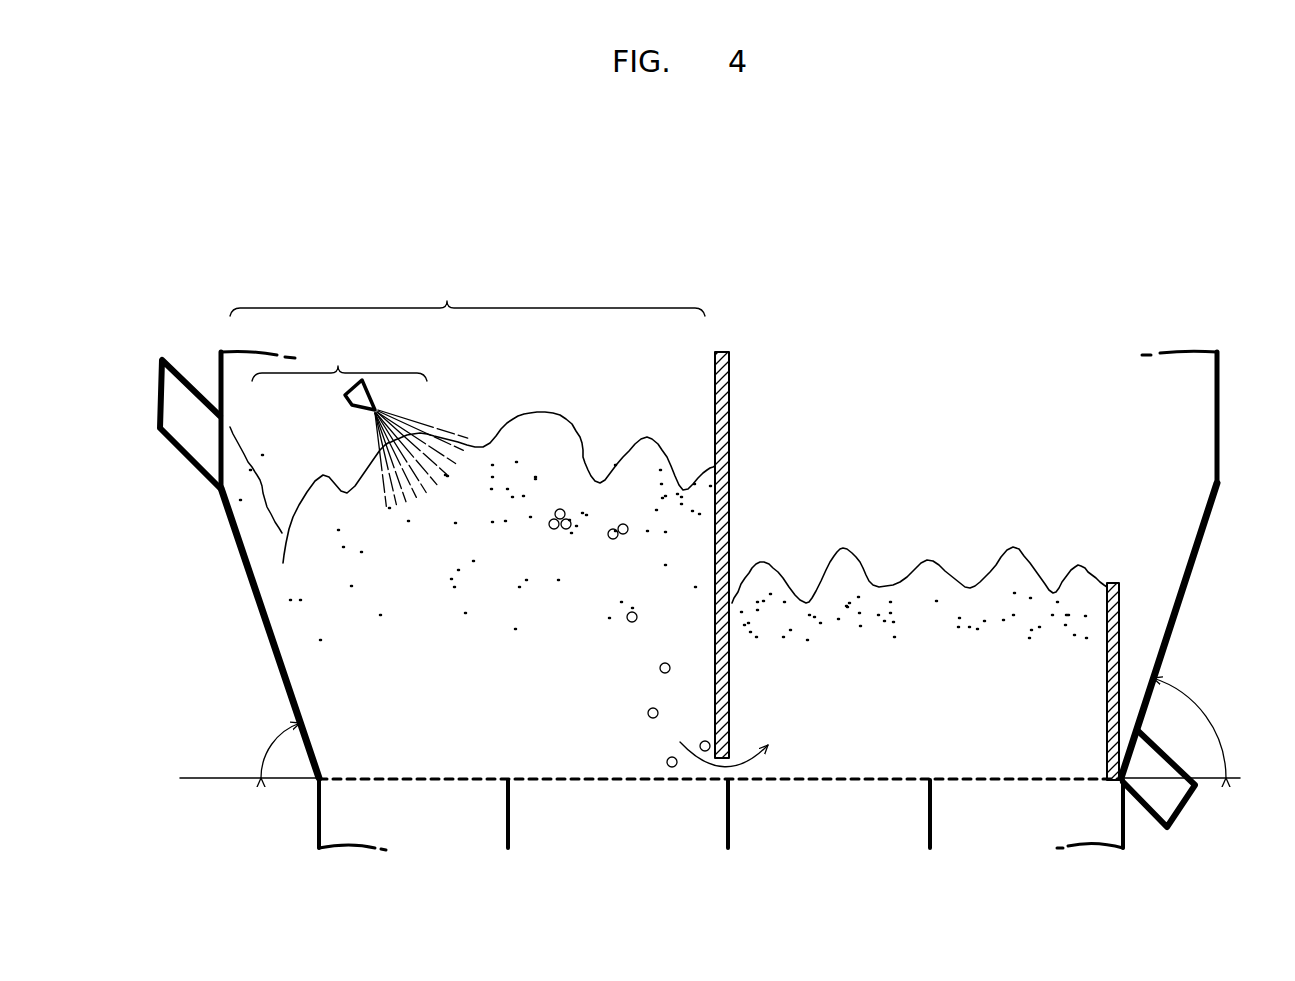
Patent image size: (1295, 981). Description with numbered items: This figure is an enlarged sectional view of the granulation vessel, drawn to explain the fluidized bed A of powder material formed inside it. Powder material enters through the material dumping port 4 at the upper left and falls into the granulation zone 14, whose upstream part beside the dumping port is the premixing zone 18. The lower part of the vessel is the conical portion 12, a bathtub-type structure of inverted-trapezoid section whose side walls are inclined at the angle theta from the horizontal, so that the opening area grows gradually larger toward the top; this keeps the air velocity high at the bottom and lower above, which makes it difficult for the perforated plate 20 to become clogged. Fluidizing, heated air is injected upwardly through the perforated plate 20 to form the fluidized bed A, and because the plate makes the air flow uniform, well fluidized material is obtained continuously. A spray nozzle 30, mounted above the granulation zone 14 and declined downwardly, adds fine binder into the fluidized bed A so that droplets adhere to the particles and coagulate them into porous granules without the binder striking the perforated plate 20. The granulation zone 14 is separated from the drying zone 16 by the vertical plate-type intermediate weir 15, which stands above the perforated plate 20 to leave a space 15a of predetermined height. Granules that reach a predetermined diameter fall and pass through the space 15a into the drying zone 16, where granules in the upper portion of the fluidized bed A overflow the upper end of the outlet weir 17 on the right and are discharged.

The material dumping port 4 is at (180, 445).
The conical portion 12 is at (282, 668).
The granulation zone 14 is at (467, 289).
The intermediate weir 15 is at (730, 370).
The space 15a is at (735, 784).
The drying zone 16 is at (915, 545).
The outlet weir 17 is at (1119, 624).
The premixing zone 18 is at (339, 354).
The perforated plate 20 is at (372, 782).
The spray nozzle 30 is at (346, 397).
The fluidized bed A is at (583, 443).